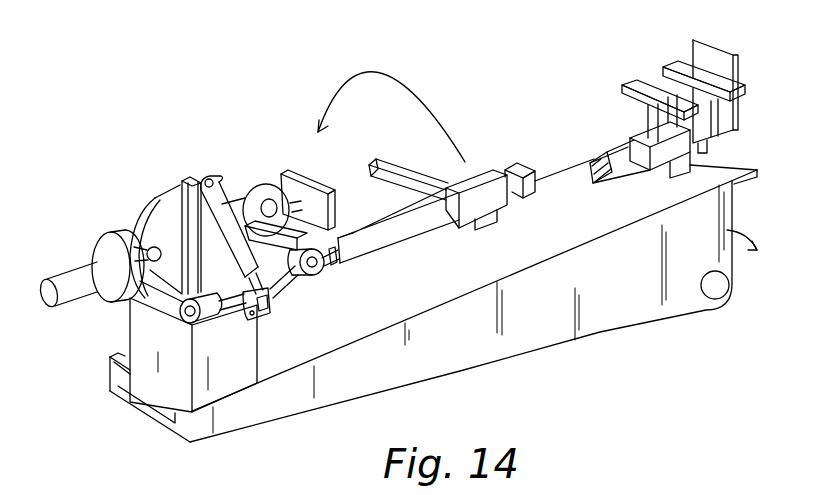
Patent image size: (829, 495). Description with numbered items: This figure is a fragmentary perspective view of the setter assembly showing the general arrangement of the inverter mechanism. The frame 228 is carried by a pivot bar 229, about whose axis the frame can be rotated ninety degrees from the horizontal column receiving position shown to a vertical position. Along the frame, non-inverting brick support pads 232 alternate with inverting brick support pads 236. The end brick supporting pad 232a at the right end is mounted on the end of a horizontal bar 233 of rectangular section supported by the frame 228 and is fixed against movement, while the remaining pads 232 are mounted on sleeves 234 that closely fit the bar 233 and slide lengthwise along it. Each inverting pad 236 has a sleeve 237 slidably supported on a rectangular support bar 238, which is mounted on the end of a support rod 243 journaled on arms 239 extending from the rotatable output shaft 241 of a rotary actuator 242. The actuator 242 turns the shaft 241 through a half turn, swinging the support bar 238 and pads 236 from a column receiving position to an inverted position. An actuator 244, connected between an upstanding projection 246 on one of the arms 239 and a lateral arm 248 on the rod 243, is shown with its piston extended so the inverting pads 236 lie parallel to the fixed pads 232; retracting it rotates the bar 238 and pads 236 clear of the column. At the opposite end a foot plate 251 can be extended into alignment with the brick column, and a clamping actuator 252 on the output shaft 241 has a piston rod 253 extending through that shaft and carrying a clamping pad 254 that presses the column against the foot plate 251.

The frame 228 is at (597, 323).
The pivot bar 229 is at (724, 292).
The non-inverting brick support pads 232 is at (633, 82).
The end brick supporting pad 232a is at (678, 63).
The horizontal bar 233 is at (620, 170).
The sleeves 234 is at (650, 140).
The inverting brick support pads 236 is at (397, 168).
The sleeve 237 is at (500, 203).
The support bar 238 is at (413, 238).
The arms 239 is at (172, 308).
The output shaft 241 is at (137, 224).
The rotary actuator 242 is at (170, 193).
The support rod 243 is at (345, 268).
The actuator 244 is at (235, 210).
The upstanding projection 246 is at (194, 178).
The lateral arm 248 is at (233, 303).
The foot plate 251 is at (717, 58).
The clamping actuator 252 is at (68, 277).
The piston rod 253 is at (295, 200).
The clamping pad 254 is at (333, 201).